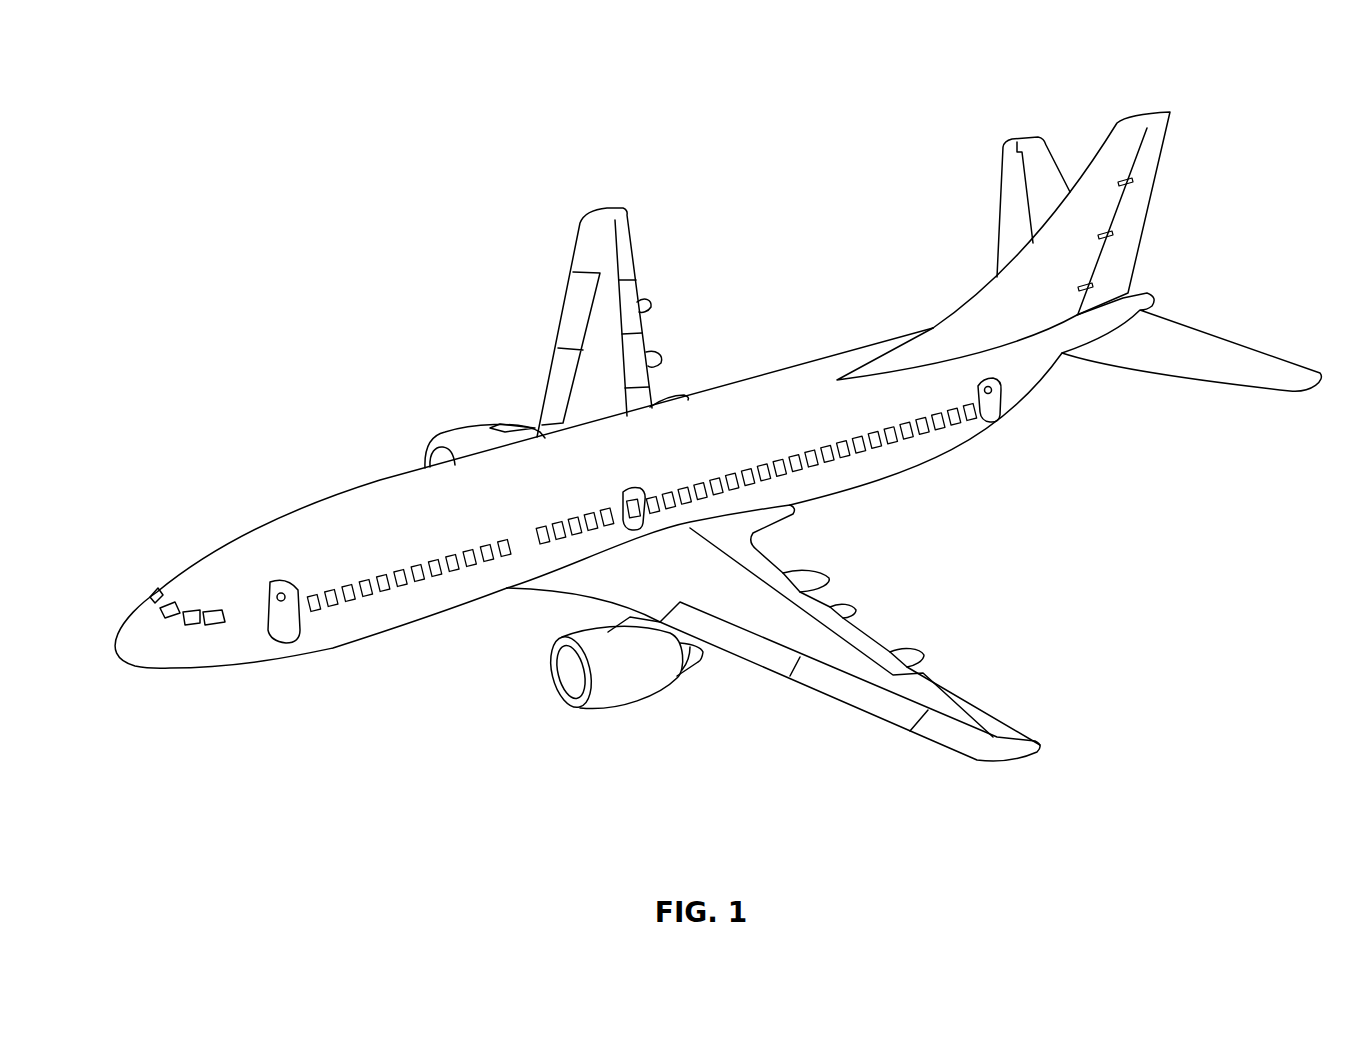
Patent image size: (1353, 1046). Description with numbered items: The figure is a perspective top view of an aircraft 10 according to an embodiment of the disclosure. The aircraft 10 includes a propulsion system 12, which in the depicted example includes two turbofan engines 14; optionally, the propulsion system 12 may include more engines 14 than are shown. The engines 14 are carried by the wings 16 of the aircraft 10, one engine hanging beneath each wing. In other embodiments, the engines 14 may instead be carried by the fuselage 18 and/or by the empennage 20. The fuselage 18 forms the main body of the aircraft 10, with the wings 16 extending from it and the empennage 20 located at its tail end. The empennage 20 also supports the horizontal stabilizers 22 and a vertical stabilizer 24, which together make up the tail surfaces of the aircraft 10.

The aircraft 10 is at (718, 434).
The propulsion system 12 is at (528, 758).
The turbofan engines 14 is at (472, 428).
The wings 16 is at (605, 214).
The fuselage 18 is at (362, 617).
The empennage 20 is at (887, 327).
The horizontal stabilizers 22 is at (1035, 152).
The vertical stabilizer 24 is at (1132, 127).